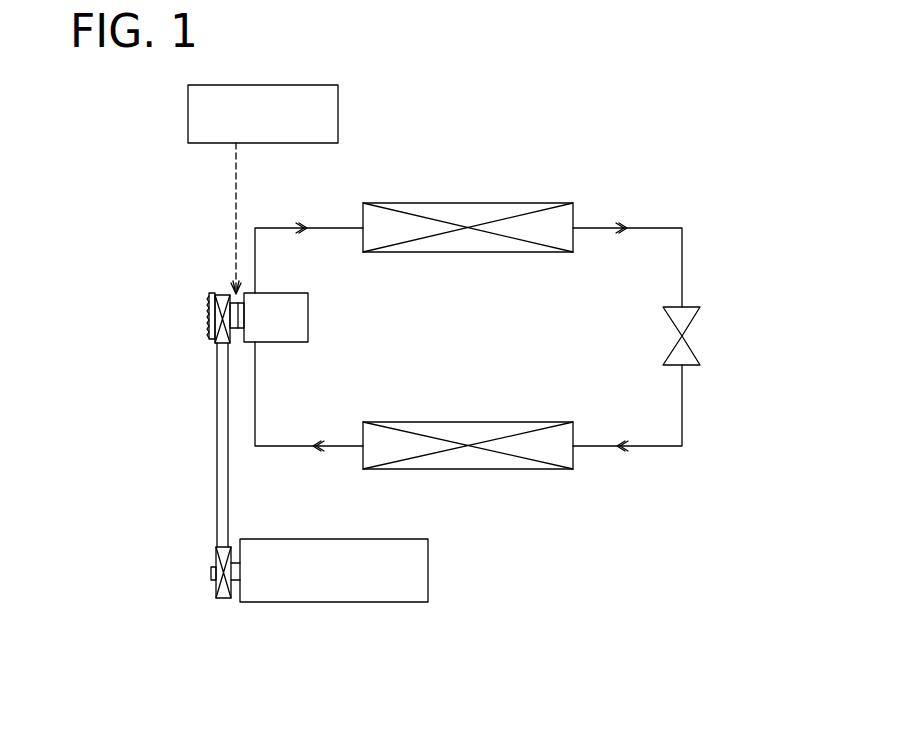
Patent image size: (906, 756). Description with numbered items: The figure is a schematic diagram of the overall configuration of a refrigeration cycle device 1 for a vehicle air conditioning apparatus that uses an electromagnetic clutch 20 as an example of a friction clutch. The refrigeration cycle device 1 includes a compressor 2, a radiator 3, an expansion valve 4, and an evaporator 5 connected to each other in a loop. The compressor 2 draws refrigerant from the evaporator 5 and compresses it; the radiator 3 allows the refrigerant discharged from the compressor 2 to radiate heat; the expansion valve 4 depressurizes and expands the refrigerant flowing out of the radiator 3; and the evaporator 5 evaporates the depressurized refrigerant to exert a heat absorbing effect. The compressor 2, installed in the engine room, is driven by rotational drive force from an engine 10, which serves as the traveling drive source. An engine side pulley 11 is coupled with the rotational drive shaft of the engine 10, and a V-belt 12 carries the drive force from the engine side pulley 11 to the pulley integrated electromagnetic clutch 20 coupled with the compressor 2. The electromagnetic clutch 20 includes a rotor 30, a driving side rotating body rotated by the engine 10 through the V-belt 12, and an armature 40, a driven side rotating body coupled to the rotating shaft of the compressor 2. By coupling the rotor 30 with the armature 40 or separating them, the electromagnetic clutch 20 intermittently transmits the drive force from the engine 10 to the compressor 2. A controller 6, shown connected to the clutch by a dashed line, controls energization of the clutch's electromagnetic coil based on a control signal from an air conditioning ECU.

The refrigeration cycle device 1 is at (664, 194).
The compressor 2 is at (308, 317).
The radiator 3 is at (475, 203).
The expansion valve 4 is at (692, 317).
The evaporator 5 is at (475, 422).
The controller 6 is at (338, 100).
The engine 10 is at (333, 602).
The engine side pulley 11 is at (216, 553).
The V-belt 12 is at (217, 443).
The electromagnetic clutch 20 is at (204, 301).
The rotor 30 is at (233, 295).
The armature 40 is at (206, 332).